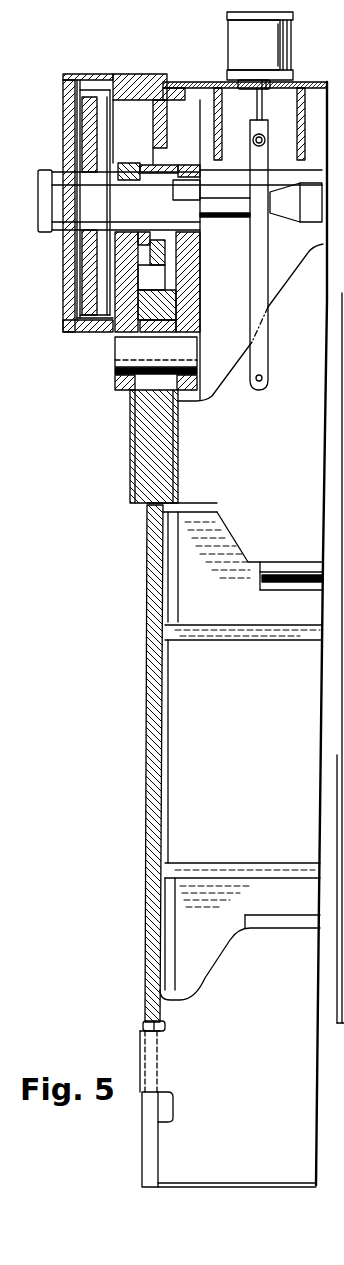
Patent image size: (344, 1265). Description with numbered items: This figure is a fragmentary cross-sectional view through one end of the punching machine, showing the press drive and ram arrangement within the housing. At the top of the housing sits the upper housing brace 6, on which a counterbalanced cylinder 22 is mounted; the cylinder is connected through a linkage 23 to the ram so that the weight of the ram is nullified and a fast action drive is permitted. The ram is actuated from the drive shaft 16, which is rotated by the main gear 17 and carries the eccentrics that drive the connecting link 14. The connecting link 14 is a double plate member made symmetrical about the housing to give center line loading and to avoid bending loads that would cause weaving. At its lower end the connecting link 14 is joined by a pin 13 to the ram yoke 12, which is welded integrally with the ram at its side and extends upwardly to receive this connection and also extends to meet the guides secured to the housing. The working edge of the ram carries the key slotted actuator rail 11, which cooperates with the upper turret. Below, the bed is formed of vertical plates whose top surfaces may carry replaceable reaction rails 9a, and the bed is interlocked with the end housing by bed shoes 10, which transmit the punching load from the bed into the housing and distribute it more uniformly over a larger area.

The upper housing brace 6 is at (305, 85).
The reaction rails 9a is at (272, 922).
The bed shoes 10 is at (143, 1093).
The actuator rail 11 is at (278, 577).
The ram yoke 12 is at (133, 452).
The pin 13 is at (116, 355).
The connecting link 14 is at (128, 167).
The drive shaft 16 is at (309, 222).
The main gear 17 is at (97, 83).
The counterbalanced cylinders 22 is at (292, 45).
The linkage 23 is at (250, 278).